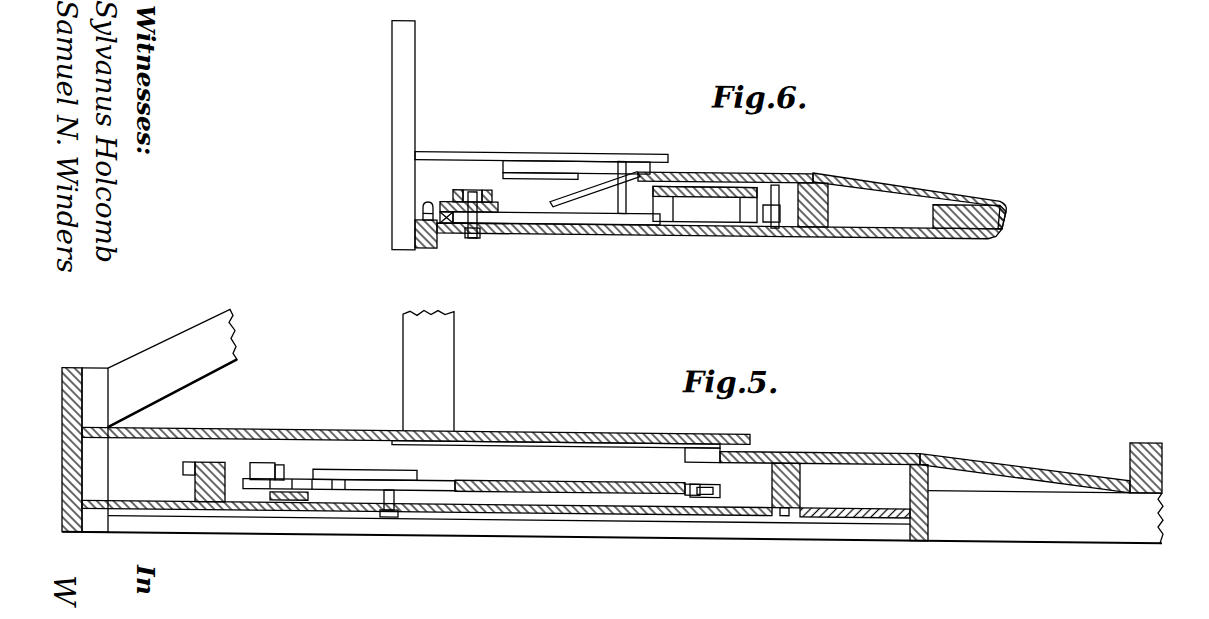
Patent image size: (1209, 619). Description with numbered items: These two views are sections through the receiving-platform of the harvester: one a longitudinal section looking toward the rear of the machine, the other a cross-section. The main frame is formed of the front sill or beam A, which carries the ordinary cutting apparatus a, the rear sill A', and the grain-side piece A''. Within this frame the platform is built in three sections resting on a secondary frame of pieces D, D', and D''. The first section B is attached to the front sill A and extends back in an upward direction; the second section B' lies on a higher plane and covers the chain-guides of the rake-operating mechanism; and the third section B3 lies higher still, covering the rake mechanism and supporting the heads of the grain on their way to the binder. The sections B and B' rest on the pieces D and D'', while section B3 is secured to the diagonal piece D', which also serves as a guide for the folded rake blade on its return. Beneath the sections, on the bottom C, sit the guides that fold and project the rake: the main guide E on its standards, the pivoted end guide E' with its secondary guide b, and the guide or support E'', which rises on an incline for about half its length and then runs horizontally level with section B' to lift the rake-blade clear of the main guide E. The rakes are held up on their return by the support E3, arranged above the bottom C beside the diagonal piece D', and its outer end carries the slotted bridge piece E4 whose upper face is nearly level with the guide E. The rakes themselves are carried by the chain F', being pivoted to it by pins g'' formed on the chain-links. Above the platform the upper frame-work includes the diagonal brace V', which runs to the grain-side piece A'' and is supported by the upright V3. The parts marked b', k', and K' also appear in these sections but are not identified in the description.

In FIG. 6, the upright V3 is at (421, 136).
In FIG. 5, the upright V3 is at (428, 370).
In FIG. 5, the diagonal brace V' is at (172, 368).
In FIG. 6, the front sill or beam A is at (974, 227).
In FIG. 5, the front sill or beam A is at (1168, 468).
In FIG. 6, the rear sill A' is at (431, 247).
In FIG. 5, the rear sill A' is at (1045, 517).
In FIG. 5, the grain-side piece A'' is at (72, 449).
In FIG. 6, the first section B is at (909, 194).
In FIG. 5, the first section B is at (1025, 469).
In FIG. 6, the second section B' is at (725, 163).
In FIG. 5, the second section B' is at (820, 445).
In FIG. 6, the third section B3 is at (541, 150).
In FIG. 5, the third section B3 is at (416, 419).
In FIG. 6, the bottom C is at (719, 245).
In FIG. 5, the bottom C is at (525, 510).
In FIG. 6, the secondary frame piece D is at (825, 205).
In FIG. 5, the diagonal piece D' is at (596, 474).
In FIG. 5, the secondary frame piece D'' is at (935, 503).
In FIG. 6, the main guide E is at (705, 204).
In FIG. 5, the end guide E' is at (260, 462).
In FIG. 6, the guide or support E'' is at (616, 166).
In FIG. 6, the support or platform E3 is at (612, 229).
In FIG. 5, the support or platform E3 is at (577, 474).
In FIG. 6, the bridge piece E4 is at (458, 190).
In FIG. 6, the chain F' is at (781, 213).
In FIG. 5, the chain F' is at (705, 479).
In FIG. 6, the pins g'' is at (787, 206).
In FIG. 5, the secondary guide b is at (194, 480).
In FIG. 5, the bearing block b' is at (289, 480).
In FIG. 5, the feed rod k' is at (349, 470).
In FIG. 5, the rod guide plate K' is at (365, 485).
In FIG. 5, the cutting apparatus a is at (340, 497).